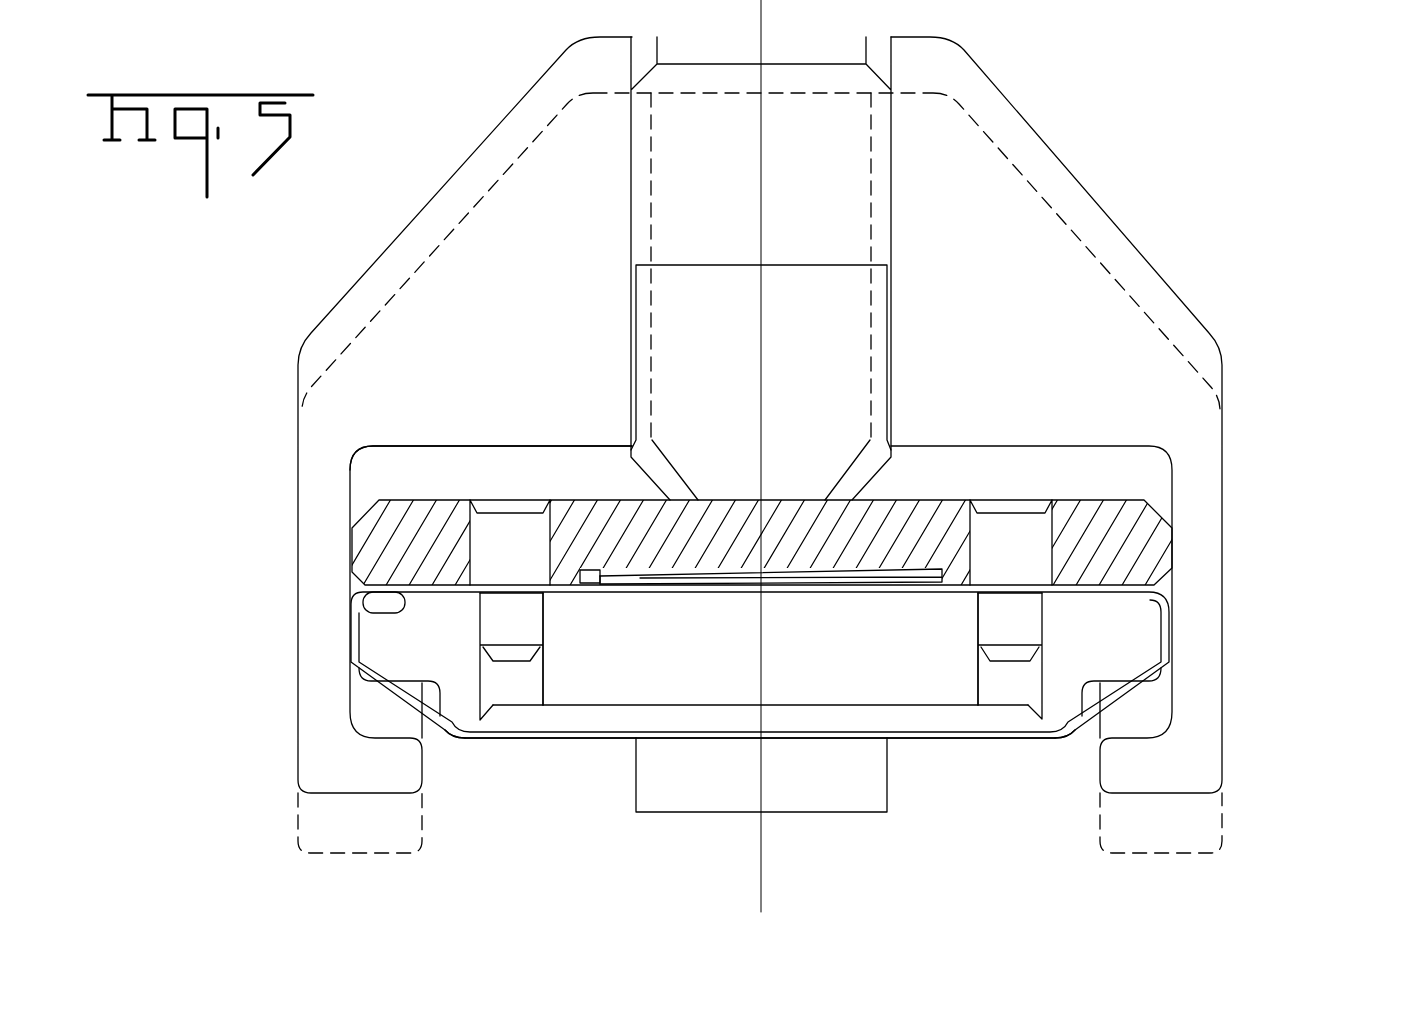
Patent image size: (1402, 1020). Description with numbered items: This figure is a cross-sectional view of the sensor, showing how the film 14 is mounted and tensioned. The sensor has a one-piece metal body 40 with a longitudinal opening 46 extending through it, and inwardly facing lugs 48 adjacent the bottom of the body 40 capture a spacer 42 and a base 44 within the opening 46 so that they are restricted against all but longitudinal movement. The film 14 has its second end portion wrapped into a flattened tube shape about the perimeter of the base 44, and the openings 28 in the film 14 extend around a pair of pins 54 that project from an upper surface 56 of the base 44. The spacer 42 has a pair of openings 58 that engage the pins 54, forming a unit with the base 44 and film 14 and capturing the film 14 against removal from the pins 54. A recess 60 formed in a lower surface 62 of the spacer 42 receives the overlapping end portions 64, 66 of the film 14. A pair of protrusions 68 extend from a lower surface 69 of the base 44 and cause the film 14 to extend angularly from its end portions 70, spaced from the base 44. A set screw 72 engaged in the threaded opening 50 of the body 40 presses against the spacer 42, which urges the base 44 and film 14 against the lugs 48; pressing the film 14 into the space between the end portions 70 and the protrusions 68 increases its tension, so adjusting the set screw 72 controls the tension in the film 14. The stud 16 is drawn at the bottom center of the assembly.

The film 14 is at (942, 735).
The stud 16 is at (820, 795).
The openings 28 is at (975, 593).
The body 40 is at (1140, 253).
The spacer 42 is at (1147, 508).
The base 44 is at (1148, 623).
The opening 46 is at (348, 487).
The lugs 48 is at (1122, 772).
The threaded opening 50 is at (892, 227).
The pins 54 is at (1022, 610).
The upper surface 56 is at (698, 590).
The openings 58 is at (1047, 533).
The recess 60 is at (878, 570).
The lower surface 62 is at (362, 608).
The end portion 64 is at (593, 570).
The end portion 66 is at (647, 593).
The protrusions 68 is at (1063, 713).
The lower surface 69 is at (783, 700).
The end portions 70 is at (1135, 662).
The set screw 72 is at (888, 340).